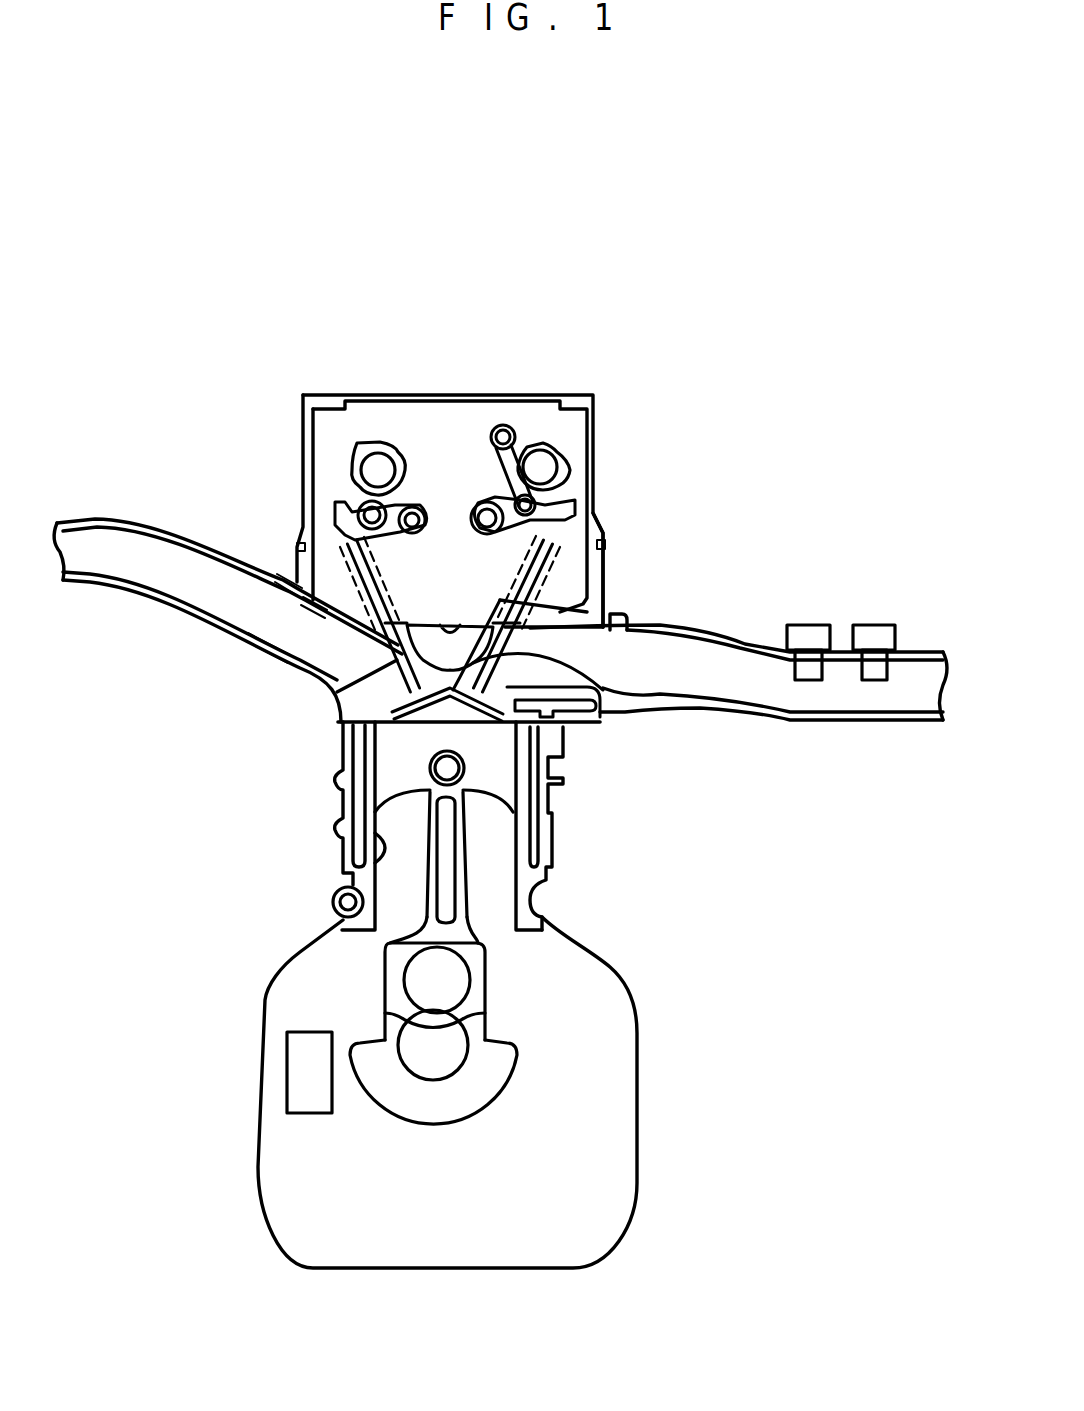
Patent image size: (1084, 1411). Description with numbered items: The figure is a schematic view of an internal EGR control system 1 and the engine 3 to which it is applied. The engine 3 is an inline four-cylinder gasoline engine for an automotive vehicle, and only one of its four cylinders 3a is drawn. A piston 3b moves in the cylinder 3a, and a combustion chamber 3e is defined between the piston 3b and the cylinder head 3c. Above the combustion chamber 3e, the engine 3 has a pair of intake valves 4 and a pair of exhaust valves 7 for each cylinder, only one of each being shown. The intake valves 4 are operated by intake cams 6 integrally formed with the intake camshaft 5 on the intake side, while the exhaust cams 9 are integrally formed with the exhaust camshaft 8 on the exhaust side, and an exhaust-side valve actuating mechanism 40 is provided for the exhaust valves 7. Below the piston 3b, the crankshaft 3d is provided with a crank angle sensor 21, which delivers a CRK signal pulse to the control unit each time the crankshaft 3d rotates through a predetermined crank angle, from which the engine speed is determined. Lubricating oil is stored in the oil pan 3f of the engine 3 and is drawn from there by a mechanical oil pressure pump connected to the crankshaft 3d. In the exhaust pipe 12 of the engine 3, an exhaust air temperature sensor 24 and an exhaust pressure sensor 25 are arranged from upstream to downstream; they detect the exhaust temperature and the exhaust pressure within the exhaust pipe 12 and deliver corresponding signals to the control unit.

The internal EGR control system 1 is at (618, 218).
The engine 3 is at (432, 376).
The cylinder 3a is at (347, 872).
The piston 3b is at (400, 758).
The cylinder head 3c is at (607, 571).
The crankshaft 3d is at (460, 1070).
The combustion chamber 3e is at (474, 726).
The oil pan 3f is at (360, 1268).
The intake valve 4 is at (402, 658).
The intake camshaft 5 is at (372, 477).
The intake cam 6 is at (365, 445).
The exhaust valve 7 is at (505, 660).
The exhaust camshaft 8 is at (543, 461).
The exhaust cam 9 is at (567, 470).
The exhaust pipe 12 is at (900, 720).
The crank angle sensor 21 is at (287, 1087).
The exhaust air temperature sensor 24 is at (873, 625).
The exhaust pressure sensor 25 is at (807, 625).
The exhaust-side valve actuating mechanism 40 is at (528, 424).